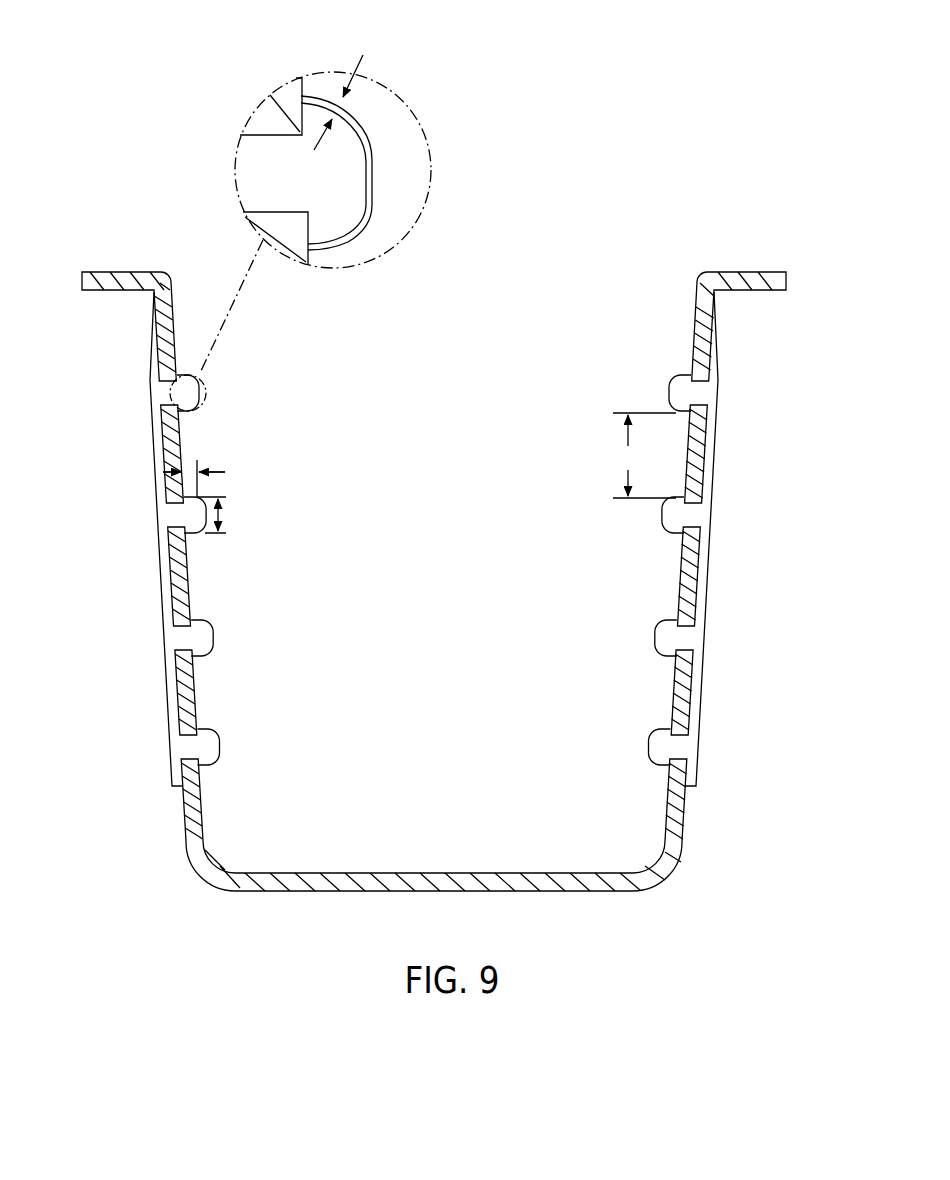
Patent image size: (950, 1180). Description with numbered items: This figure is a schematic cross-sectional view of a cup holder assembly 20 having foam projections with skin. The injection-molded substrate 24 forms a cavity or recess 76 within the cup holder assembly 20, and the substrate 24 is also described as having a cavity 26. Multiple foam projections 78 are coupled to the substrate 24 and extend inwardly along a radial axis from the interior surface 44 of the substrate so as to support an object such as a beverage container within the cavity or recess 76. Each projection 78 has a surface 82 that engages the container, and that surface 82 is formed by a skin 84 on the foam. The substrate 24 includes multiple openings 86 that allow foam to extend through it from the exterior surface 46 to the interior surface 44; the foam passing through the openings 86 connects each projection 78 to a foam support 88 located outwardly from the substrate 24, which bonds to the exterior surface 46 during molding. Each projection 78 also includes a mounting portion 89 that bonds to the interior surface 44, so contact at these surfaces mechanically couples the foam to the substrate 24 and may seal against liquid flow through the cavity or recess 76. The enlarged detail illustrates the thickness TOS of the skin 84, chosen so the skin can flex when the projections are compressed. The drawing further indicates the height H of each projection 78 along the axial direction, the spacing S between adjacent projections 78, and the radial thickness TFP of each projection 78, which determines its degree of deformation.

The cup holder assembly 20 is at (736, 206).
The substrate 24 is at (752, 272).
The cavity 26 is at (196, 262).
The interior surface 44 is at (176, 336).
The exterior surface 46 is at (150, 292).
The cavity or recess 76 is at (486, 282).
The foam projections 78 is at (253, 326).
The surface 82 is at (374, 172).
The skin 84 is at (370, 152).
The openings 86 is at (142, 397).
The foam support 88 is at (160, 452).
The mounting portion 89 is at (311, 107).
The thickness of the skin TOS is at (368, 107).
The thickness of each foam projection TFP is at (205, 472).
The height of each foam projection H is at (221, 516).
The spacing between adjacent foam projections S is at (644, 455).